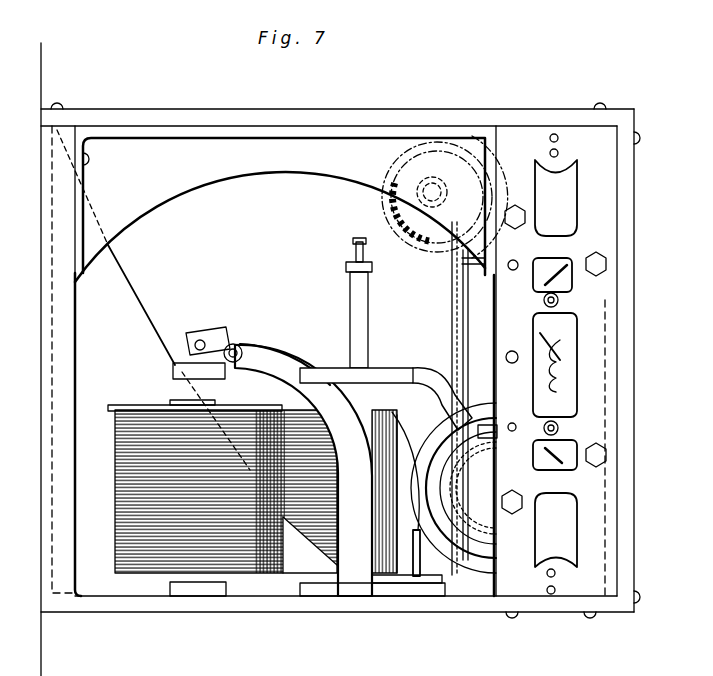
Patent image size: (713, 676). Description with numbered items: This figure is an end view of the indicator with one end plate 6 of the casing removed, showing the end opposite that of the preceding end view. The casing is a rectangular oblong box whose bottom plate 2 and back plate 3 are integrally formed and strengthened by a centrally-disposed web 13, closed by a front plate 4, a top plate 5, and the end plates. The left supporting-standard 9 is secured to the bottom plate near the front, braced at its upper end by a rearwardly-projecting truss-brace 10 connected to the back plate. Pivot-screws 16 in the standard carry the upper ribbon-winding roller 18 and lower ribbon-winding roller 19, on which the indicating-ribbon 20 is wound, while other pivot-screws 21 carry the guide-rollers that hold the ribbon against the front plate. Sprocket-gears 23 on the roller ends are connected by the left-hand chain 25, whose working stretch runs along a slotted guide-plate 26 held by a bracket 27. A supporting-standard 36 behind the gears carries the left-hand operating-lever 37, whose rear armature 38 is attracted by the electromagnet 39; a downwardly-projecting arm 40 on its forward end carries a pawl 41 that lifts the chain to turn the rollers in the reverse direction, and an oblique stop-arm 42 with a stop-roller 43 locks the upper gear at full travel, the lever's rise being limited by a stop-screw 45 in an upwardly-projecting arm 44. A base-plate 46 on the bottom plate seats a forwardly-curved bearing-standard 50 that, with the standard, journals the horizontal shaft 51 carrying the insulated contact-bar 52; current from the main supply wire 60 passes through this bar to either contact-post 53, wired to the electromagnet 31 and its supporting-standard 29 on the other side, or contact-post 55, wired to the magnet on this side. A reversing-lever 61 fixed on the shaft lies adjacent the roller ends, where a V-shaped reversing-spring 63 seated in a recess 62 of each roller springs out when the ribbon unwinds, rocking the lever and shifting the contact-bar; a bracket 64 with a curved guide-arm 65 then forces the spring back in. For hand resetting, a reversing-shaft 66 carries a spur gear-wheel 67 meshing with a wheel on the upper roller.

The bottom plate 2 is at (326, 607).
The back plate 3 is at (52, 382).
The front plate 4 is at (622, 350).
The top plate 5 is at (390, 126).
The end plate 6 is at (280, 227).
The left supporting-standard 9 is at (600, 550).
The truss-brace 10 is at (284, 367).
The web 13 is at (138, 318).
The pivot-screw 16 is at (516, 212).
The upper ribbon-winding roller 18 is at (560, 200).
The lower ribbon-winding roller 19 is at (610, 512).
The indicating-ribbon 20 is at (612, 305).
The pivot-screw 21 is at (606, 264).
The sprocket-gear 23 is at (453, 488).
The chain 25 is at (458, 322).
The guide-plate 26 is at (465, 336).
The bracket 27 is at (452, 268).
The supporting-standard 29 is at (420, 556).
The electromagnet 31 is at (310, 393).
The supporting-standard 36 is at (303, 470).
The left-hand operating-lever 37 is at (225, 347).
The armature 38 is at (178, 372).
The electromagnet 39 is at (135, 470).
The downwardly-projecting arm 40 is at (385, 415).
The pawl 41 is at (440, 440).
The stop-arm 42 is at (488, 451).
The stop-roller 43 is at (452, 375).
The upwardly-projecting arm 44 is at (350, 307).
The stop-screw 45 is at (352, 258).
The base-plate 46 is at (435, 613).
The bearing-standard 50 is at (400, 482).
The shaft 51 is at (512, 351).
The contact-bar 52 is at (560, 338).
The contact-post 53 is at (420, 425).
The contact-post 55 is at (359, 538).
The main supply wire 60 is at (560, 374).
The reversing-lever 61 is at (472, 285).
The recess 62 is at (570, 452).
The reversing-spring 63 is at (573, 466).
The bracket 64 is at (560, 300).
The guide-arm 65 is at (634, 228).
The reversing-shaft 66 is at (388, 198).
The spur gear-wheel 67 is at (392, 220).